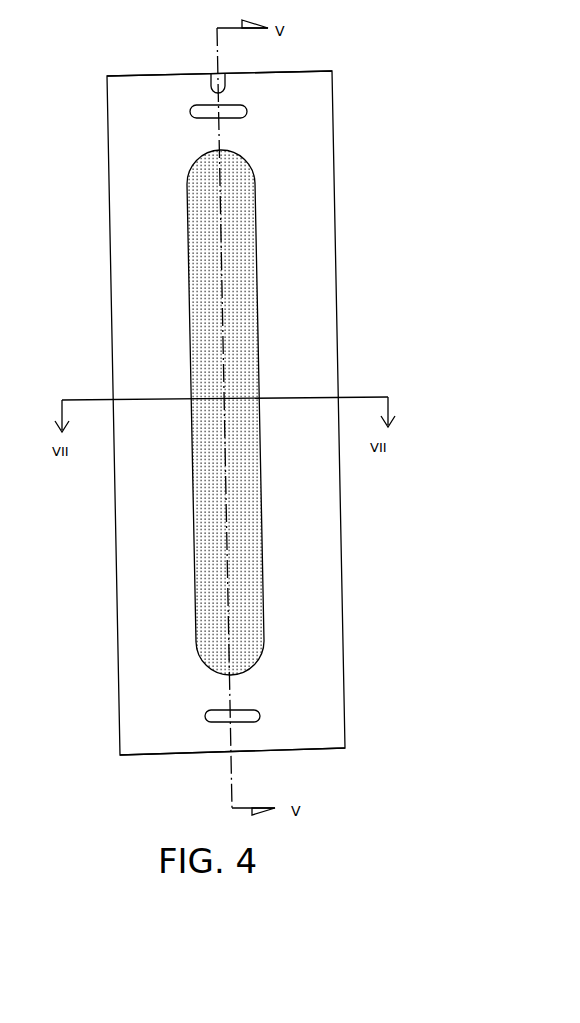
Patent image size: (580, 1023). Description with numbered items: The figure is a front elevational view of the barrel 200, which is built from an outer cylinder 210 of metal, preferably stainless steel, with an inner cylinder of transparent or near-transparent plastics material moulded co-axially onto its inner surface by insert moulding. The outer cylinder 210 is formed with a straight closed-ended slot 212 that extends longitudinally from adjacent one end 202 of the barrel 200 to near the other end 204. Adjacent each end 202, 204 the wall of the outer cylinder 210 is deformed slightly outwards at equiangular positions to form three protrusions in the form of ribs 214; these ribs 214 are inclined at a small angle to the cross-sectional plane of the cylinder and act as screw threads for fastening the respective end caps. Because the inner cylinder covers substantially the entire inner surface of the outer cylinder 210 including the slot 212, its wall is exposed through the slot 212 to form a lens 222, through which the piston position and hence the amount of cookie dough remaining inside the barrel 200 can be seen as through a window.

The barrel 200 is at (344, 200).
The end of the barrel 202 is at (130, 122).
The end of the barrel 204 is at (140, 725).
The outer cylinder 210 is at (337, 261).
The slot 212 is at (259, 412).
The ribs 214 is at (236, 109).
The lens 222 is at (247, 518).